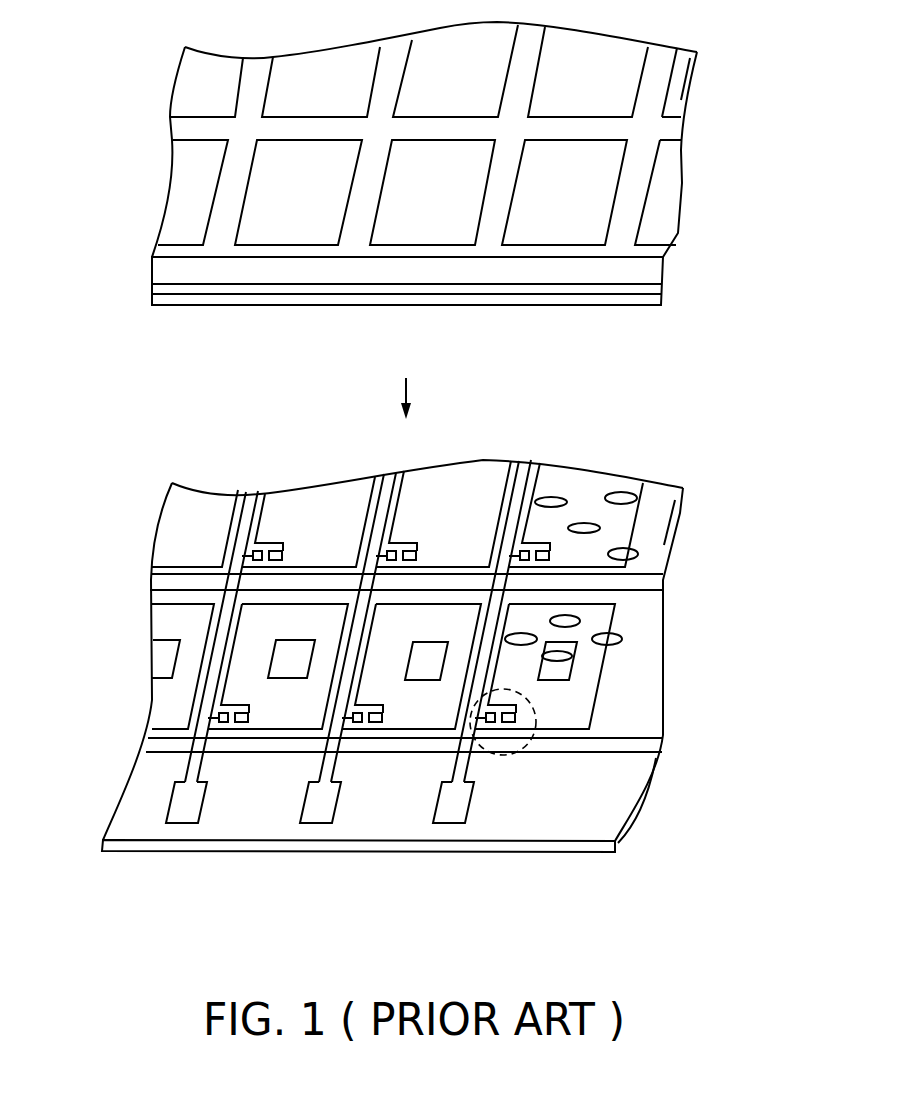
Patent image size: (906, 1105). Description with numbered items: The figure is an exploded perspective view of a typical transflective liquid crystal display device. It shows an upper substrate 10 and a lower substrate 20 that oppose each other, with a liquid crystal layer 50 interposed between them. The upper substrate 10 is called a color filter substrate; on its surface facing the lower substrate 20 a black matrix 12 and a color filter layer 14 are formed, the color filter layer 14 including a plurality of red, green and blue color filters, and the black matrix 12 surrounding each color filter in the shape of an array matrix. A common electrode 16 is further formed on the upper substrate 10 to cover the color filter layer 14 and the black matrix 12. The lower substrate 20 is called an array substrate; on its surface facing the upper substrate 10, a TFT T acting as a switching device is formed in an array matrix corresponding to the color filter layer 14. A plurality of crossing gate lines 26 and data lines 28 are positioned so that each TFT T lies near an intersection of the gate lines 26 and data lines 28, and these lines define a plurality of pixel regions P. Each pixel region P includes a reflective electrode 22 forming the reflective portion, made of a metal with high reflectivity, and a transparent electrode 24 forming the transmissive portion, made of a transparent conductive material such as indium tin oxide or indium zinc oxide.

The upper substrate 10 is at (627, 273).
The black matrix 12 is at (668, 133).
The color filter layer 14 is at (603, 183).
The common electrode 16 is at (628, 303).
The lower substrate 20 is at (598, 847).
The reflective electrode 22 is at (577, 697).
The transparent electrode 24 is at (573, 643).
The gate line 26 is at (627, 747).
The data line 28 is at (452, 770).
The liquid crystal layer 50 is at (625, 552).
The pixel region P is at (614, 749).
The TFT T is at (485, 753).